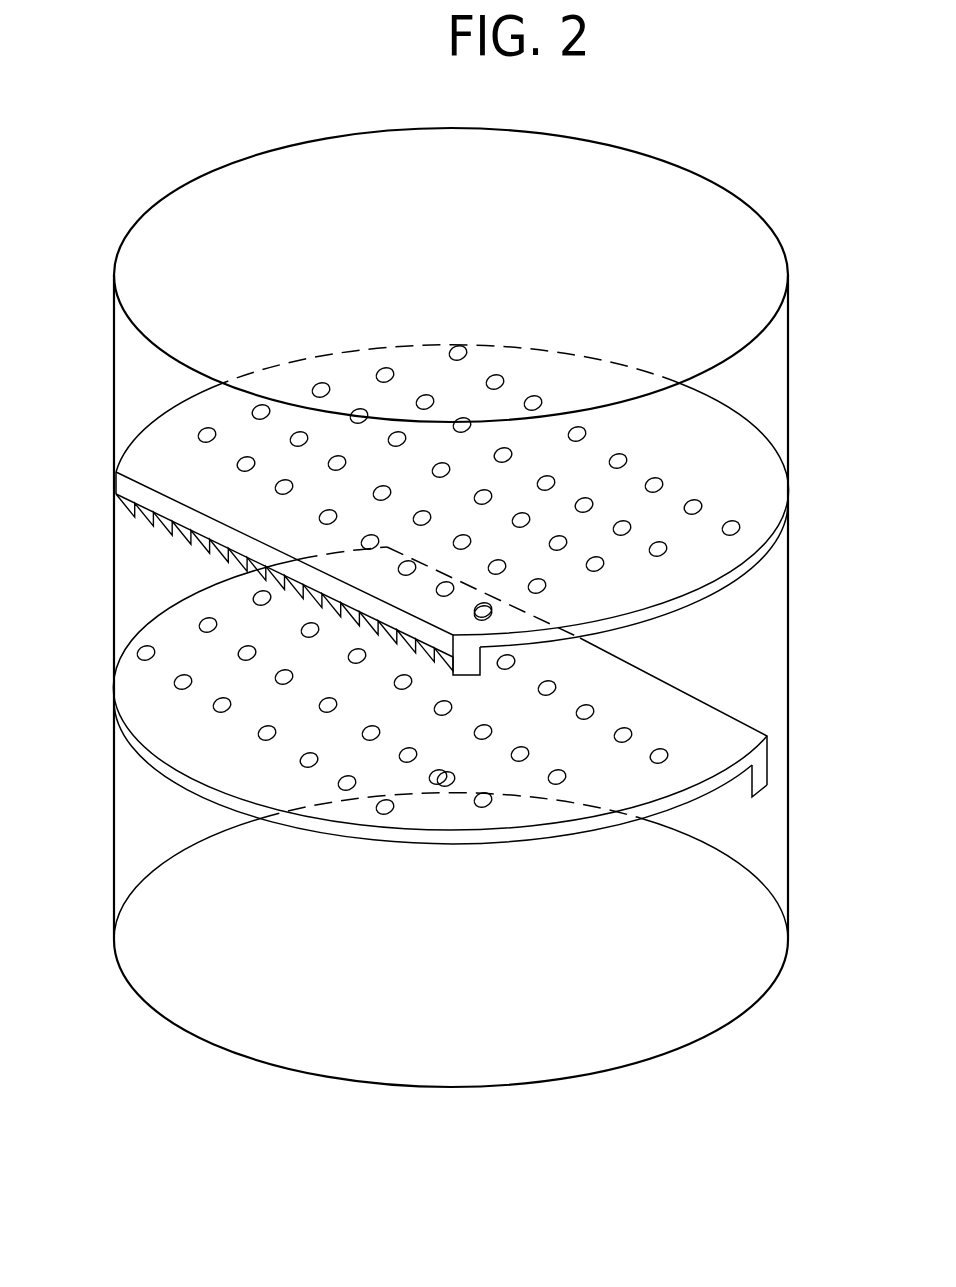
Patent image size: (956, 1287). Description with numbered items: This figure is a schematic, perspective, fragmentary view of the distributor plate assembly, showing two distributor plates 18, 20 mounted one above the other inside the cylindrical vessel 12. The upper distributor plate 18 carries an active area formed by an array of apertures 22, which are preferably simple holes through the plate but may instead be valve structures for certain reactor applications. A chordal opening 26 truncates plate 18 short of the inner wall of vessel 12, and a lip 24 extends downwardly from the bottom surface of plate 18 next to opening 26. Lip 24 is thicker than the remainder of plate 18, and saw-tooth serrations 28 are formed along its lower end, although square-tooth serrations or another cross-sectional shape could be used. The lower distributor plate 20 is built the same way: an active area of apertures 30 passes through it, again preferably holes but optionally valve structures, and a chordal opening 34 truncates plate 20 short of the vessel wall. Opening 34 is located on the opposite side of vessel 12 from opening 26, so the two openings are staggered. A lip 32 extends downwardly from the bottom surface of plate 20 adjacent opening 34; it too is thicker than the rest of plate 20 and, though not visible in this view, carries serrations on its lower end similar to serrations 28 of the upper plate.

The vessel 12 is at (788, 376).
The distributor plate 18 is at (727, 577).
The distributor plate 20 is at (425, 838).
The apertures 22 is at (275, 487).
The lip 24 is at (140, 493).
The chordal opening 26 is at (153, 610).
The serrations 28 is at (177, 537).
The apertures 30 is at (556, 681).
The lip 32 is at (769, 758).
The chordal opening 34 is at (757, 683).